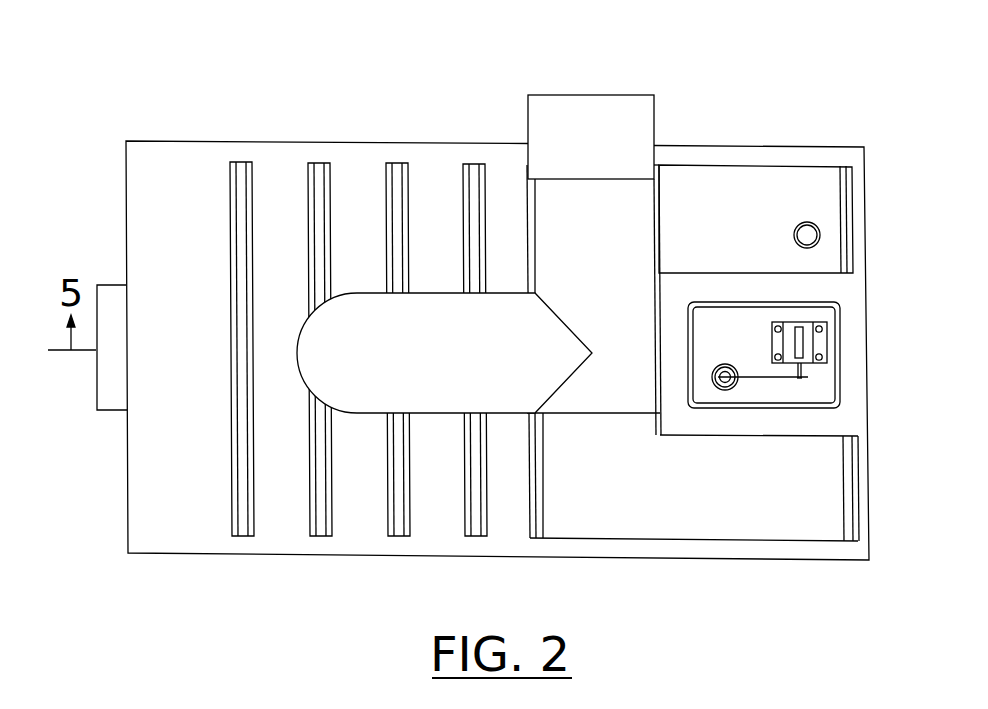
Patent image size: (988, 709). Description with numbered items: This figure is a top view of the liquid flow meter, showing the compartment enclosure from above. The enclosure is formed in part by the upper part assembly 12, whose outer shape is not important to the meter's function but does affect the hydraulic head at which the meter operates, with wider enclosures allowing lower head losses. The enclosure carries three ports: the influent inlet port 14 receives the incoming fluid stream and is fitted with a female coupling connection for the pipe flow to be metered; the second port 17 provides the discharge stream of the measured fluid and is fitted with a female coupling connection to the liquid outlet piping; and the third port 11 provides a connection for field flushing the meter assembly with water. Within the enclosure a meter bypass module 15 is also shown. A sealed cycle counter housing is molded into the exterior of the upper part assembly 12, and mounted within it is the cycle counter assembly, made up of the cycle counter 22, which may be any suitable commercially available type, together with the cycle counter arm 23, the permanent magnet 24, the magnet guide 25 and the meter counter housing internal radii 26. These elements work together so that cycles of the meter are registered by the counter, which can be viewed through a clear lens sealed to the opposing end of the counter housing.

The third port 11 is at (817, 226).
The upper part assembly 12 is at (207, 137).
The influent inlet port 14 is at (590, 95).
The meter bypass module 15 is at (433, 402).
The second port 17 is at (96, 350).
The cycle counter 22 is at (827, 334).
The cycle counter arm 23 is at (765, 377).
The permanent magnet 24 is at (725, 390).
The magnet guide 25 is at (729, 362).
The meter counter housing internal radii 26 is at (820, 410).